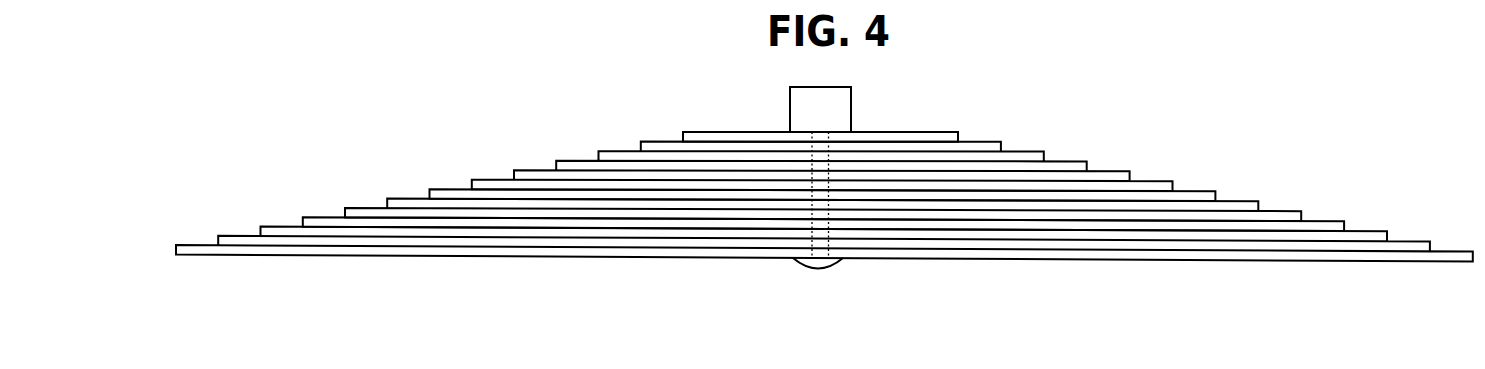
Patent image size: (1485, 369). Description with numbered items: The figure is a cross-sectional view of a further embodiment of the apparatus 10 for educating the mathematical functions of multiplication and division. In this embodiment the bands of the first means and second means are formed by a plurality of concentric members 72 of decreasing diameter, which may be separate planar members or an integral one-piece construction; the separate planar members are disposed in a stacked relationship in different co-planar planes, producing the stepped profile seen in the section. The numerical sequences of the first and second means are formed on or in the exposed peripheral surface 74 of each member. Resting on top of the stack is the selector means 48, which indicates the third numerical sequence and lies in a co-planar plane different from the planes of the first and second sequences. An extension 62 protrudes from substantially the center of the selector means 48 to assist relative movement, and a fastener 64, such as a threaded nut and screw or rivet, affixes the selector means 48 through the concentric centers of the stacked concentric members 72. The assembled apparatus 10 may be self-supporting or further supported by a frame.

The apparatus 10 is at (824, 180).
The selector means 48 is at (942, 128).
The extension 62 is at (852, 107).
The fastener 64 is at (838, 261).
The concentric members 72 is at (1217, 143).
The exposed peripheral surface 74 is at (1335, 200).